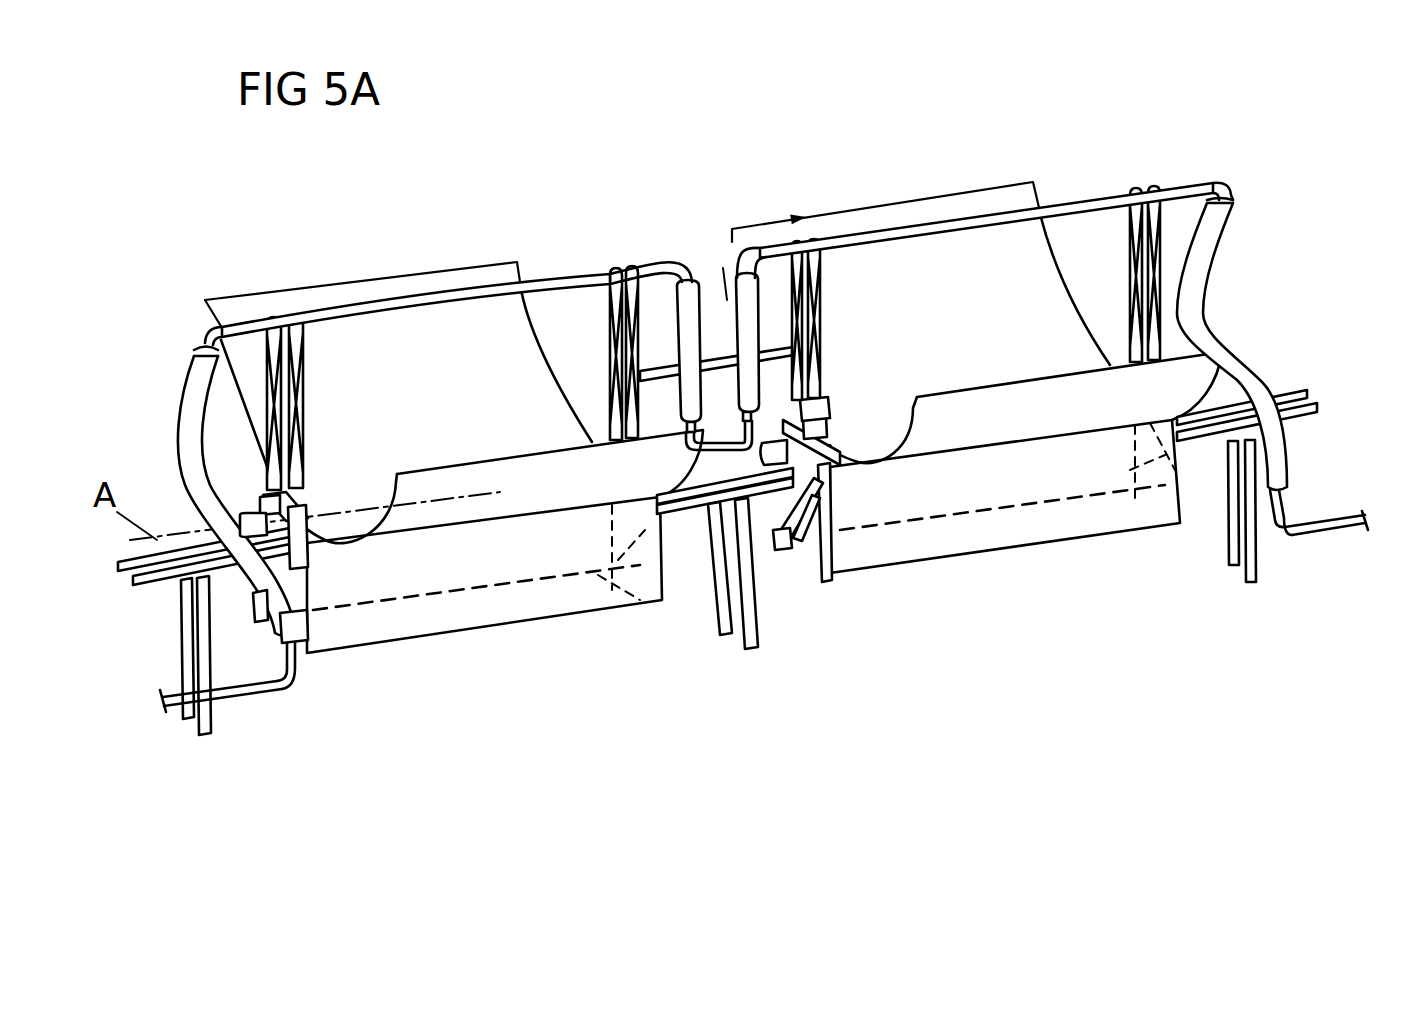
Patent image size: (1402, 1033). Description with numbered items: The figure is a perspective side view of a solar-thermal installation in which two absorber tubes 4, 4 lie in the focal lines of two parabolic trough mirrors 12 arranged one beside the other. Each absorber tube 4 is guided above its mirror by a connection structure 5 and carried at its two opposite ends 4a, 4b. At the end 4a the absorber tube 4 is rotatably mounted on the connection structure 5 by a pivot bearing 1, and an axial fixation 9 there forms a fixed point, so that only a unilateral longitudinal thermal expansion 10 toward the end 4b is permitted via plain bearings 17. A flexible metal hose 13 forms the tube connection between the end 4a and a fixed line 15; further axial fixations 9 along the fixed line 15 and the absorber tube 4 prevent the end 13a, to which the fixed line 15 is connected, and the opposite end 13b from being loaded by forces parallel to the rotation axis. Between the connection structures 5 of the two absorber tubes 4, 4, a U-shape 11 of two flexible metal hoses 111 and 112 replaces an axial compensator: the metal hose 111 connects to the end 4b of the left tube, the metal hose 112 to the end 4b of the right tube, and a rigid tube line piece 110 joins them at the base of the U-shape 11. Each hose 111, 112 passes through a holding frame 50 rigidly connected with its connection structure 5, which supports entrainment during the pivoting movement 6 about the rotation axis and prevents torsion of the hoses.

The pivot bearing 1 is at (828, 420).
The absorber tube 4 is at (440, 300).
The end of absorber tube 4a is at (243, 322).
The end of absorber tube 4b is at (688, 278).
The connection structure 5 is at (303, 418).
The pivoting movement 6 is at (213, 432).
The axial fixation 9 is at (302, 327).
The unilateral longitudinal thermal expansion 10 is at (280, 280).
The U-shape 11 is at (733, 458).
The parabolic trough mirror 12 is at (461, 427).
The flexible metal hose 13 is at (185, 458).
The end of metal hose 13a is at (289, 658).
The end of metal hose 13b is at (208, 340).
The fixed line 15 is at (247, 688).
The plain bearing 17 is at (612, 287).
The holding frame 50 is at (657, 367).
The rigid tube line piece 110 is at (717, 452).
The flexible metal hose 111 is at (680, 402).
The flexible metal hose 112 is at (723, 268).